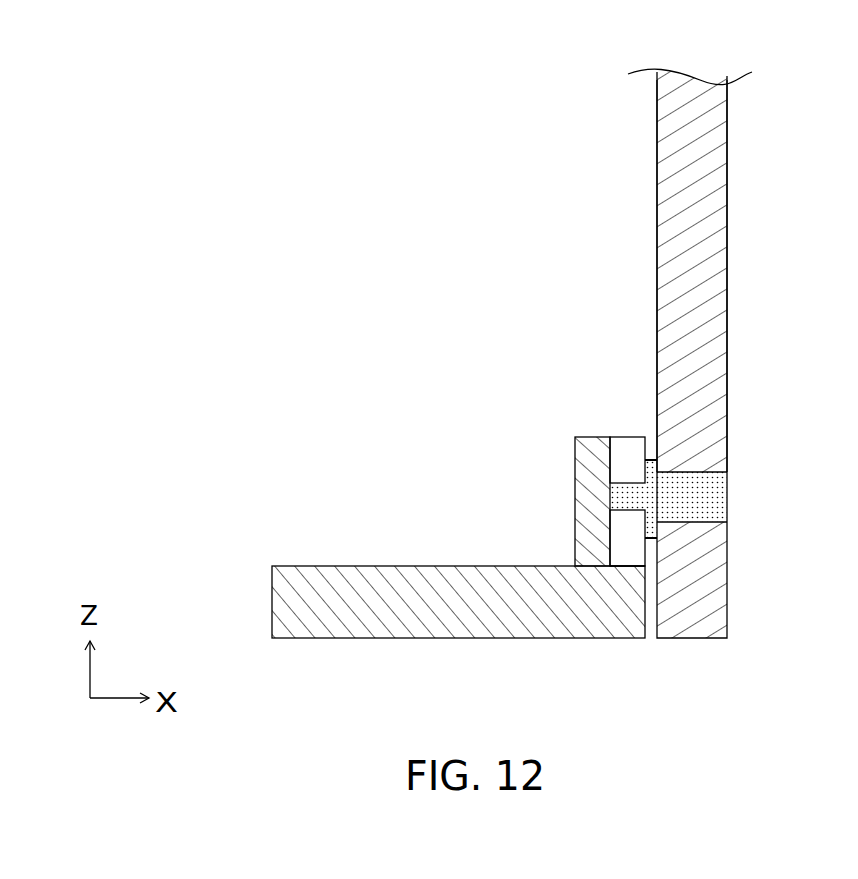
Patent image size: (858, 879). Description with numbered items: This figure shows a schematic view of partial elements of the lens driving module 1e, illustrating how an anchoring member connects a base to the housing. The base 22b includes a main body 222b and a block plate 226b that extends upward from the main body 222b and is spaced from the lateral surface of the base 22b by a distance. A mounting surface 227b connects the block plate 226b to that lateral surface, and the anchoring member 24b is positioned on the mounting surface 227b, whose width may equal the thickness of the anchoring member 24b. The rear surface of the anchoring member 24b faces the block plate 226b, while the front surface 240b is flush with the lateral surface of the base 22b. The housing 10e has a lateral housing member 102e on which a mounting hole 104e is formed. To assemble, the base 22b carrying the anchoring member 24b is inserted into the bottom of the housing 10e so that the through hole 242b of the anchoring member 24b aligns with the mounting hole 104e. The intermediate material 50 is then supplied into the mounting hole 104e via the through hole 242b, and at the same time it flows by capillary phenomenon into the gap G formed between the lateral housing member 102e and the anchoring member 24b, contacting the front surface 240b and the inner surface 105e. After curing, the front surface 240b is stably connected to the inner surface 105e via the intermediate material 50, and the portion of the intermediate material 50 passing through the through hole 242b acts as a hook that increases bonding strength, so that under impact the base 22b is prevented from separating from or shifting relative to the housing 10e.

The lens driving module 1e is at (312, 170).
The housing 10e is at (736, 353).
The inner surface 105e is at (656, 237).
The lateral housing member 102e is at (713, 292).
The mounting hole 104e is at (685, 469).
The anchoring member 24b is at (722, 455).
The front surface 240b is at (647, 547).
The through hole 242b is at (632, 498).
The intermediate material 50 is at (700, 485).
The gap G is at (649, 449).
The base 22b is at (456, 577).
The main body 222b is at (504, 640).
The block plate 226b is at (592, 503).
The mounting surface 227b is at (630, 568).